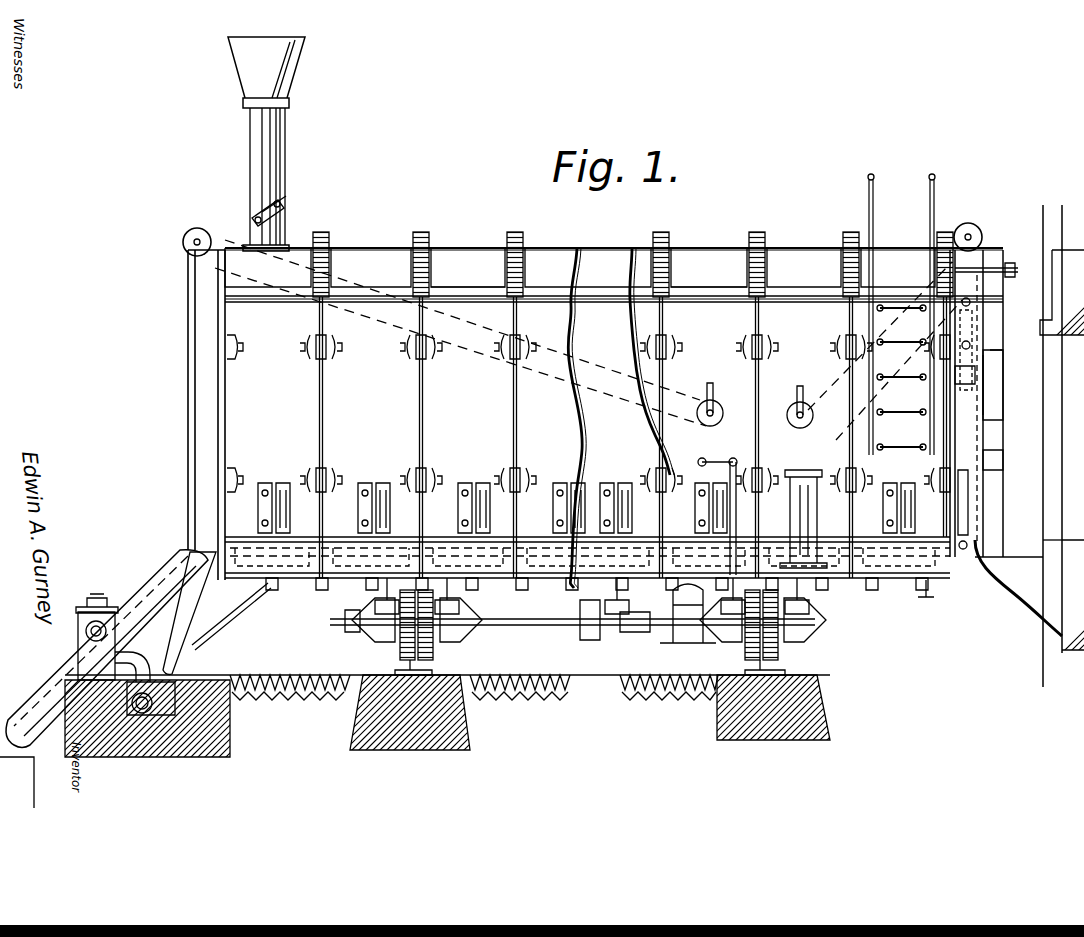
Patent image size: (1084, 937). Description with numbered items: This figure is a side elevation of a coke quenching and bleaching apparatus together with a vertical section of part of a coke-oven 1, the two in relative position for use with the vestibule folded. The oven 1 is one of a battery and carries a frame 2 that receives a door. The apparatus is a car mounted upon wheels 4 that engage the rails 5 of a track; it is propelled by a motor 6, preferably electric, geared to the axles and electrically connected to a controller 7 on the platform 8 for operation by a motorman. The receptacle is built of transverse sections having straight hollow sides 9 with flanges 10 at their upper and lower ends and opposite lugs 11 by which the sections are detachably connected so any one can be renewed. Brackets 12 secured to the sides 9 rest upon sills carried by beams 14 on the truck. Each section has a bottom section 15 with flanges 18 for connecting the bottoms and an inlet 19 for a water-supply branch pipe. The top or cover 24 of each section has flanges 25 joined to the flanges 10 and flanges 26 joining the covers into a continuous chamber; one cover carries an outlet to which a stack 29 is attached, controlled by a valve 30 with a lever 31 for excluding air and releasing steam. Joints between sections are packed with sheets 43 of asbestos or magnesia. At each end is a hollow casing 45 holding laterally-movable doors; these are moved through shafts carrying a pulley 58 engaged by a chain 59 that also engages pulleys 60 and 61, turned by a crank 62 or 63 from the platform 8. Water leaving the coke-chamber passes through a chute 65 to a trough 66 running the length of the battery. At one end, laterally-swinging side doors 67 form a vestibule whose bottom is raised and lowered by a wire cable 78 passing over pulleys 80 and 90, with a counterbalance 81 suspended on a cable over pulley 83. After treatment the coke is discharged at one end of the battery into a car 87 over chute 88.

The coke-oven 1 is at (1062, 446).
The frame 2 is at (945, 314).
The wheels 4 is at (400, 650).
The rails 5 is at (422, 662).
The motor 6 is at (653, 623).
The controller 7 is at (762, 516).
The platform 8 is at (890, 612).
The sides 9 is at (533, 380).
The flanges 10 is at (472, 297).
The lugs 11 is at (300, 350).
The brackets 12 is at (258, 510).
The beams 14 is at (375, 603).
The bottom section 15 is at (618, 561).
The flanges 18 is at (268, 592).
The inlet 19 is at (280, 592).
The top or cover 24 is at (245, 262).
The flanges 25 is at (458, 295).
The flanges 26 is at (225, 250).
The stack 29 is at (270, 144).
The valve 30 is at (262, 210).
The lever 31 is at (285, 203).
The sheets 43 is at (322, 425).
The hollow casing 45 is at (195, 412).
The pulley 58 is at (183, 245).
The chain 59 is at (600, 365).
The pulley 60 is at (723, 419).
The pulley 61 is at (789, 420).
The crank 62 is at (723, 395).
The crank 63 is at (788, 398).
The chute 65 is at (195, 635).
The trough 66 is at (151, 698).
The side doors 67 is at (992, 390).
The wire cable 78 is at (976, 370).
The pulley 80 is at (972, 343).
The counterbalance 81 is at (968, 510).
The pulley 83 is at (972, 303).
The car 87 is at (58, 755).
The chute 88 is at (107, 649).
The pulley 90 is at (1018, 588).